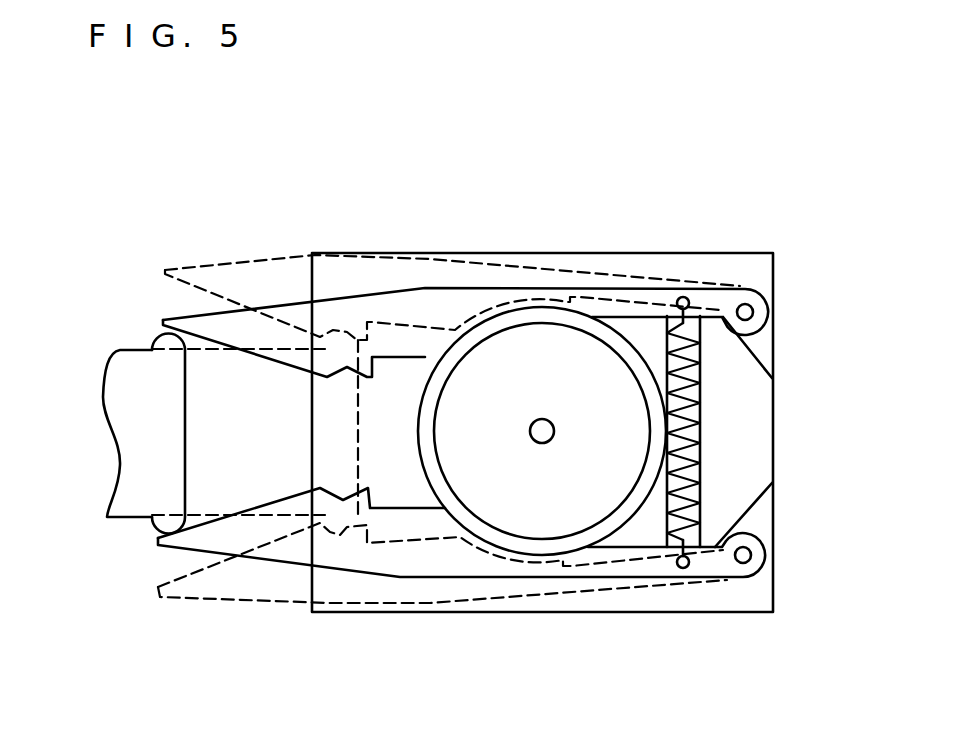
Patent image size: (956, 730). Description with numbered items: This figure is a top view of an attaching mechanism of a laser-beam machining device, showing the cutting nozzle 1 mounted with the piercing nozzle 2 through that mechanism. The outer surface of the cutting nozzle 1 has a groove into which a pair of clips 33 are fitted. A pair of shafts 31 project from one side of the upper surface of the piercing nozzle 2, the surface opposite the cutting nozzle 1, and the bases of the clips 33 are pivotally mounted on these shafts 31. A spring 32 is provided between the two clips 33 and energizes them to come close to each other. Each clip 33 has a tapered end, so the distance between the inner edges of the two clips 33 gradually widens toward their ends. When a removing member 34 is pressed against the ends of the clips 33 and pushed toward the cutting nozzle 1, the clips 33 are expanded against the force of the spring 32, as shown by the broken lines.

The cutting nozzle 1 is at (543, 318).
The piercing nozzle 2 is at (667, 267).
The shaft 31 is at (749, 312).
The spring 32 is at (702, 492).
The clip 33 is at (447, 305).
The removing member 34 is at (128, 416).